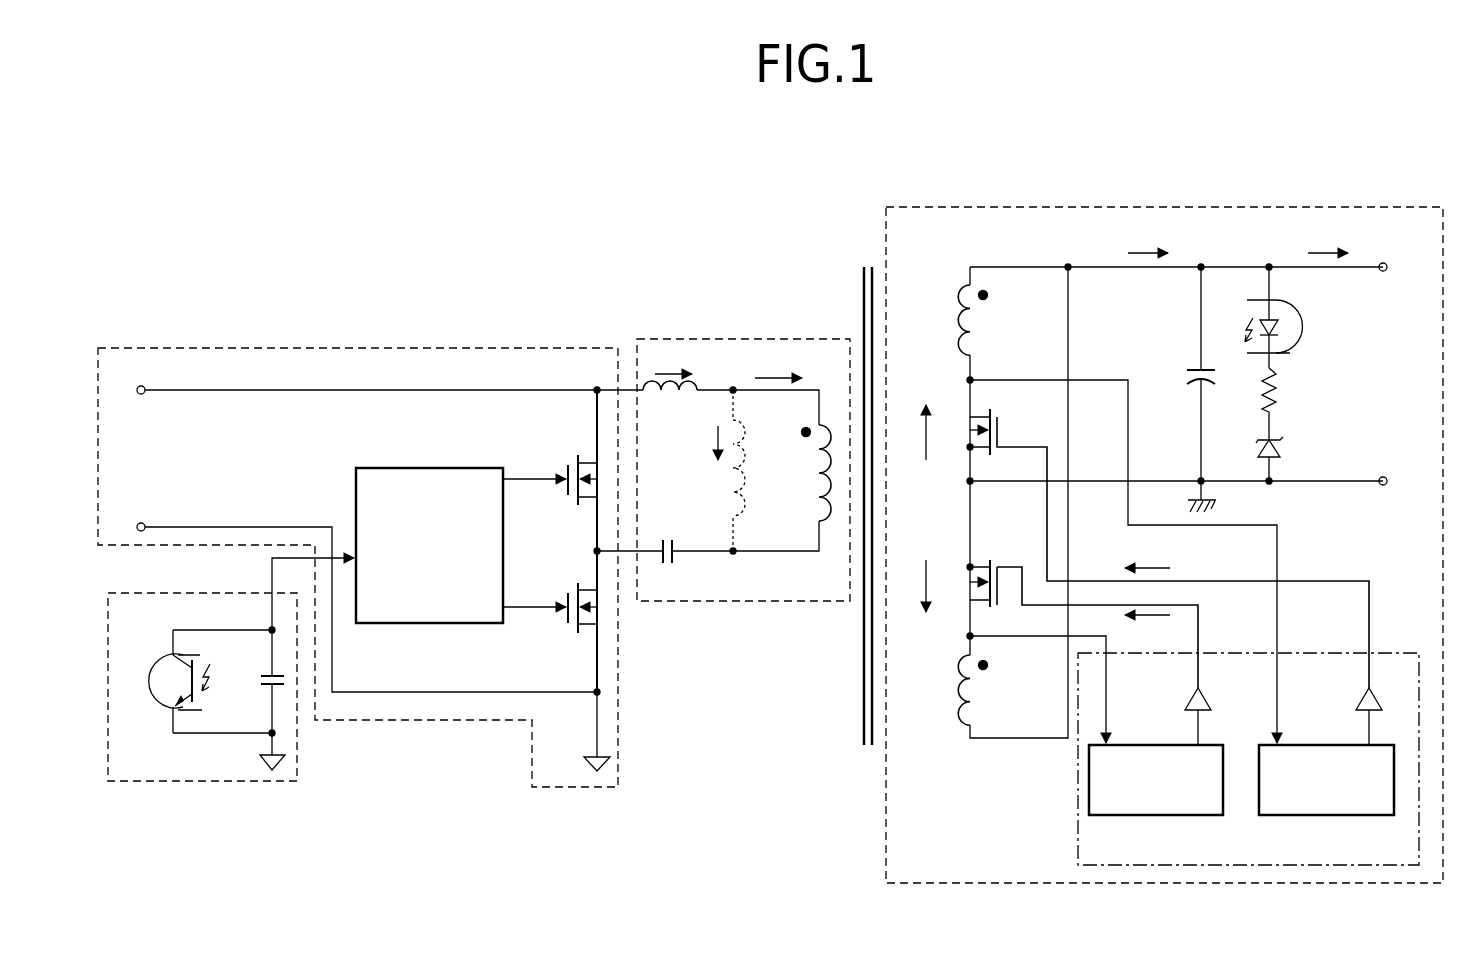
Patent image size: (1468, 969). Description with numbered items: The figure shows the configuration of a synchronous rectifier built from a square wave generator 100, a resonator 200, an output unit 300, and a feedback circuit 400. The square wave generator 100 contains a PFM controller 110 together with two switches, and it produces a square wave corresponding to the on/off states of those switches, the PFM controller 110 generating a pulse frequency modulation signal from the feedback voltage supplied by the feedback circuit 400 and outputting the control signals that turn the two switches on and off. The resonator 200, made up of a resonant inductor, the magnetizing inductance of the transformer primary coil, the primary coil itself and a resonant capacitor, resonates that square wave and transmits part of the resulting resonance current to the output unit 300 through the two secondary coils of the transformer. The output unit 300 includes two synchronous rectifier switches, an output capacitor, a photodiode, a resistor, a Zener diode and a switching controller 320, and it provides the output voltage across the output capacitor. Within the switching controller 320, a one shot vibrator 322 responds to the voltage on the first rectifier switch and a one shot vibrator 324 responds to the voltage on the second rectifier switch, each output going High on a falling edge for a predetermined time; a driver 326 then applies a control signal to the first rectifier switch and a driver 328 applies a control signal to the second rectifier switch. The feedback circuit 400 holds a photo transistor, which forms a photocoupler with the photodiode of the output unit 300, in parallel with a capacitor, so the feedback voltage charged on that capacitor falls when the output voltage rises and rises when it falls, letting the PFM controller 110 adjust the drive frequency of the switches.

The square wave generator 100 is at (340, 348).
The PFM controller 110 is at (417, 468).
The resonator 200 is at (706, 339).
The output unit 300 is at (886, 235).
The switching controller 320 is at (1410, 641).
The one shot vibrator 322 is at (1340, 815).
The one shot vibrator 324 is at (1168, 815).
The driver 326 is at (1357, 700).
The driver 328 is at (1208, 700).
The feedback circuit 400 is at (192, 593).